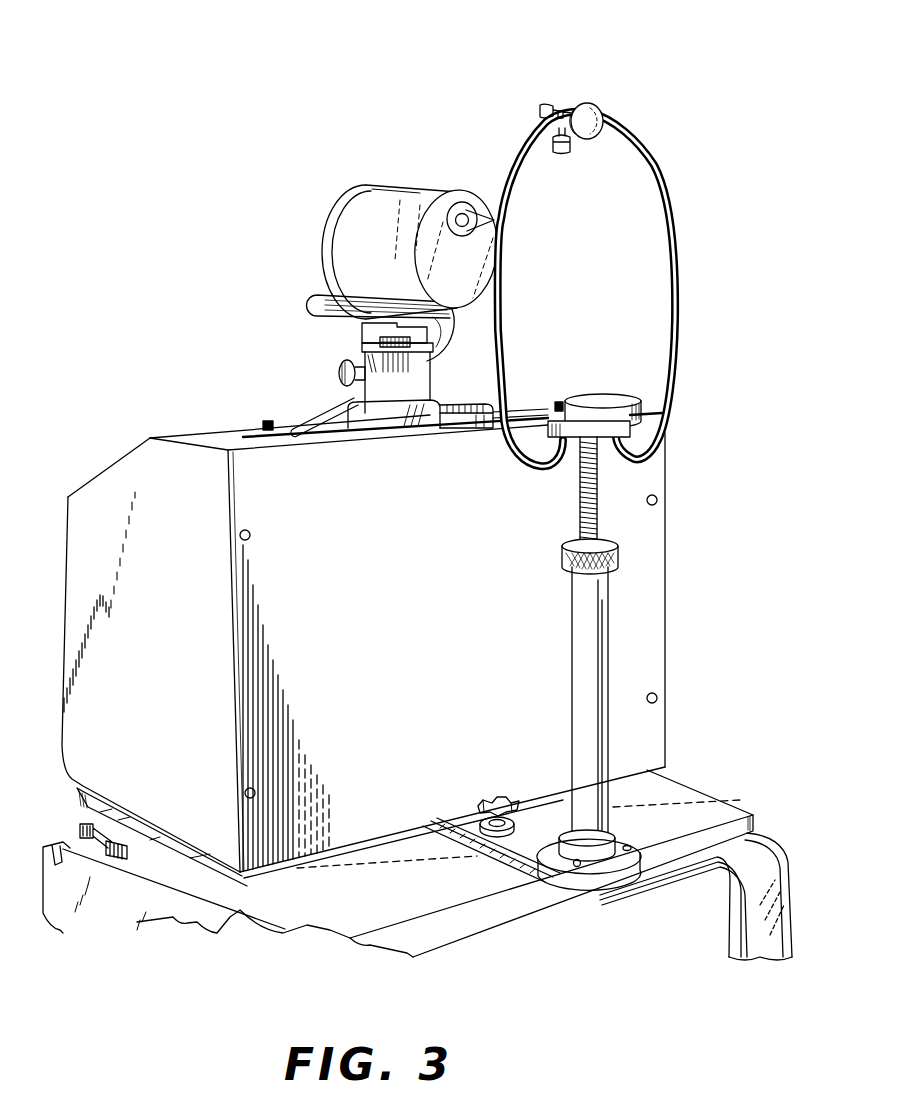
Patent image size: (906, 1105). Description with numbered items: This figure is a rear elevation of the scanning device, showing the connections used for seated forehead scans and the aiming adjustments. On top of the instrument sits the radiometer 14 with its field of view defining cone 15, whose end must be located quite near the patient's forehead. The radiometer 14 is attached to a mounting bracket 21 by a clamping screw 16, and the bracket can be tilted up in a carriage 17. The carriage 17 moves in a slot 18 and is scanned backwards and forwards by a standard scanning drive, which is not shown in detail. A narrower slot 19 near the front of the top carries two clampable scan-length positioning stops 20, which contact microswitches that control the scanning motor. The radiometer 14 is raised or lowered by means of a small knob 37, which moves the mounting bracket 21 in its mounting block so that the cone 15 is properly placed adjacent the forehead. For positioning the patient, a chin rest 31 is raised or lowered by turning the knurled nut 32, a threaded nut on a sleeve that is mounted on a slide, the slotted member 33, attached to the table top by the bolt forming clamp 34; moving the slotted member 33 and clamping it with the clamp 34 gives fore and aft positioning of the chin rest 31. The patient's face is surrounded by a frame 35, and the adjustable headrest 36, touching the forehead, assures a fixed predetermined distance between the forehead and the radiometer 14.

The radiometer 14 is at (407, 185).
The field of view defining cone 15 is at (467, 237).
The clamping screw 16 is at (362, 337).
The carriage 17 is at (447, 398).
The slot 18 is at (233, 430).
The narrower slot 19 is at (290, 423).
The scan-length positioning stops 20 is at (265, 422).
The mounting bracket 21 is at (425, 334).
The chin rest 31 is at (608, 392).
The knurled nut 32 is at (562, 550).
The slotted member 33 is at (517, 850).
The clamp 34 is at (492, 797).
The frame 35 is at (680, 254).
The headrest 36 is at (584, 103).
The small knob 37 is at (340, 364).